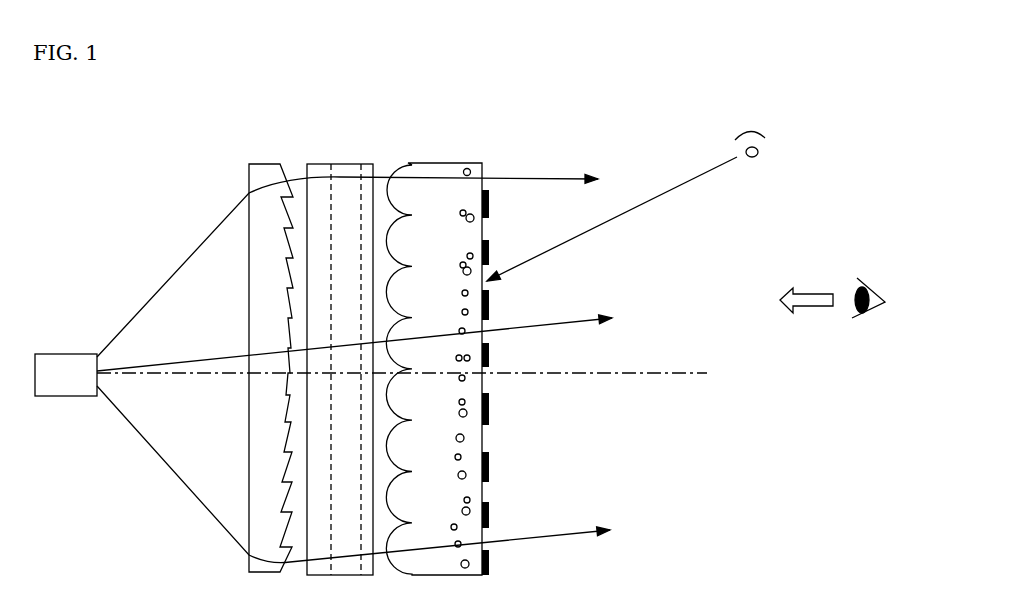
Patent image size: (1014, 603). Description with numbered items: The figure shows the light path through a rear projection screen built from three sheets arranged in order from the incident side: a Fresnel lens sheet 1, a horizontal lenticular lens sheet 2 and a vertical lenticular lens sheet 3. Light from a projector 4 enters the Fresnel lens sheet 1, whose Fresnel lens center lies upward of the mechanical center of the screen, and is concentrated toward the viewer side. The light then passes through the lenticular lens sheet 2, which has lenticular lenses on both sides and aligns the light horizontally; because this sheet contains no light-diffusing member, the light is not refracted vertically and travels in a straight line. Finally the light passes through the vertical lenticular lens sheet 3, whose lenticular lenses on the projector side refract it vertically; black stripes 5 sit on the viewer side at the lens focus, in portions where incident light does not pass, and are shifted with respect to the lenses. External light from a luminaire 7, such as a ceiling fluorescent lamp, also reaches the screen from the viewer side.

The Fresnel lens sheet 1 is at (271, 343).
The horizontal lenticular lens sheet 2 is at (340, 344).
The vertical lenticular lens sheet 3 is at (434, 344).
The light source 4 is at (70, 362).
The black stripes 5 is at (490, 162).
The luminaire 7 is at (768, 140).